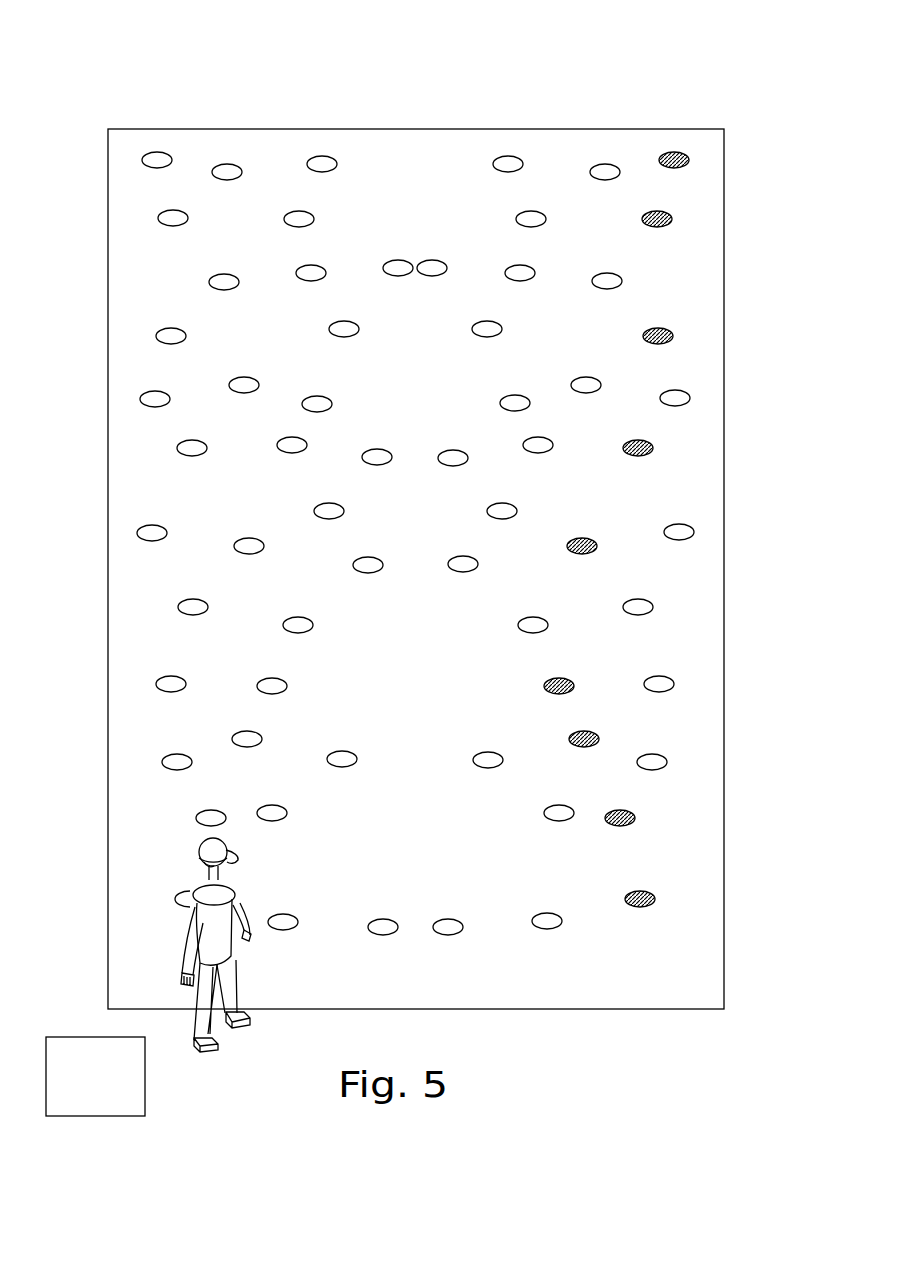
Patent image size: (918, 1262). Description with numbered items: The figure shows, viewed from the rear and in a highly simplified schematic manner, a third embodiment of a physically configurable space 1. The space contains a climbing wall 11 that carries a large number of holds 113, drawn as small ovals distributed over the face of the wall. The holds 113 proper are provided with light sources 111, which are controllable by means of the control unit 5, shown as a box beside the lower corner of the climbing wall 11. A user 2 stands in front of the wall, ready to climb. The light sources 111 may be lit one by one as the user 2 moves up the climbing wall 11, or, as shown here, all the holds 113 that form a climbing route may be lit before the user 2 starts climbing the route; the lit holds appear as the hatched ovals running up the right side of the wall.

The physically configurable space 1 is at (485, 88).
The climbing wall 11 is at (145, 280).
The light sources 111 is at (688, 164).
The holds 113 is at (172, 335).
The user 2 is at (198, 840).
The control unit 5 is at (93, 1082).